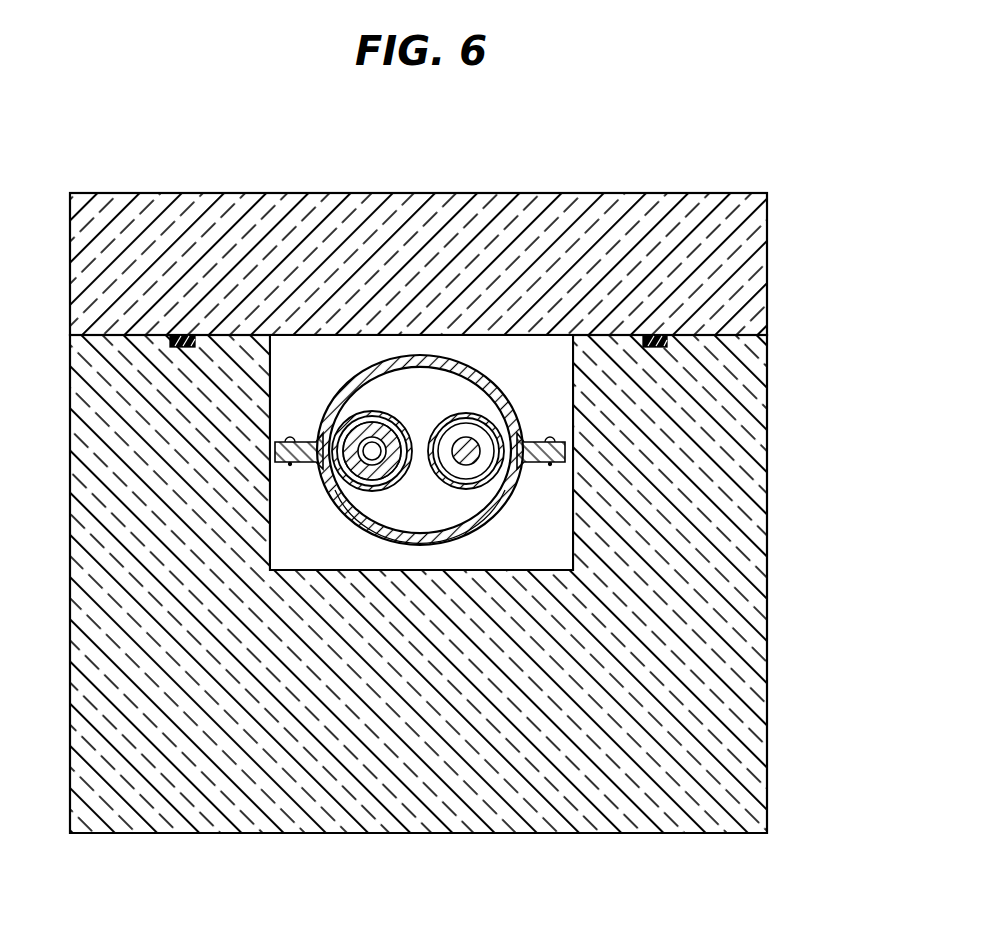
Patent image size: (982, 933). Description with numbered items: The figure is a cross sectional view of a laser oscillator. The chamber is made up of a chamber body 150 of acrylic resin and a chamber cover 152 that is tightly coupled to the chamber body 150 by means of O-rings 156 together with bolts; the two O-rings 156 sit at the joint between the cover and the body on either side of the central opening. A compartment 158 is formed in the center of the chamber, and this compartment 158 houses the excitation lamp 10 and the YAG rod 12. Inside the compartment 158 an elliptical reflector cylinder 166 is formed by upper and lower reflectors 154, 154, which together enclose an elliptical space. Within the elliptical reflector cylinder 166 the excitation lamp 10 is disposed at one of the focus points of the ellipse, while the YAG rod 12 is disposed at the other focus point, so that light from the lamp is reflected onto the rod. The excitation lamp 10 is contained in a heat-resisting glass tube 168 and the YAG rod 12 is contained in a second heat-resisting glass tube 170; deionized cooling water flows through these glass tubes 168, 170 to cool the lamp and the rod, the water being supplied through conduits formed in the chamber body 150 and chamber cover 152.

The excitation lamp 10 is at (382, 433).
The YAG rod 12 is at (485, 478).
The chamber body 150 is at (458, 833).
The chamber cover 152 is at (430, 193).
The reflector 154 is at (462, 372).
The O-ring 156 is at (183, 335).
The compartment 158 is at (332, 548).
The elliptical reflector cylinder 166 is at (440, 512).
The heat-resisting glass tube 168 is at (372, 412).
The heat-resisting glass tube 170 is at (482, 418).